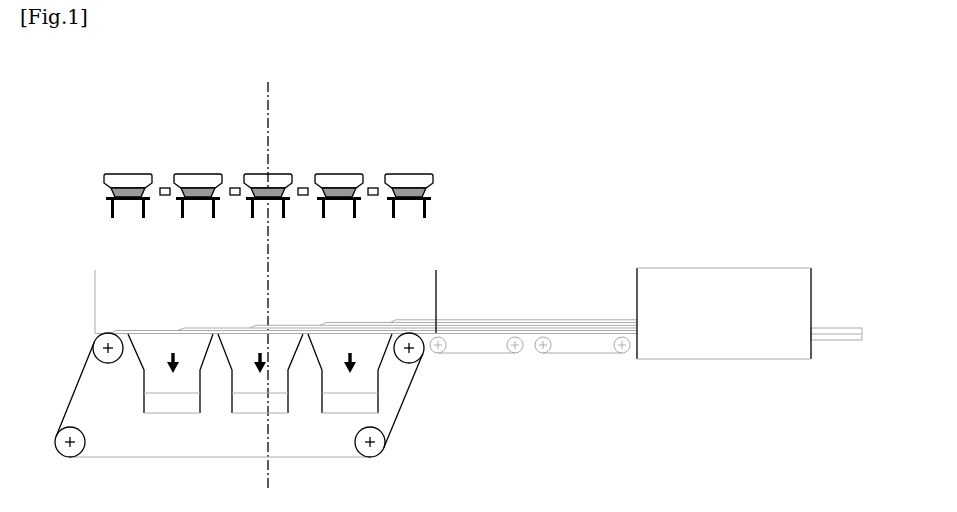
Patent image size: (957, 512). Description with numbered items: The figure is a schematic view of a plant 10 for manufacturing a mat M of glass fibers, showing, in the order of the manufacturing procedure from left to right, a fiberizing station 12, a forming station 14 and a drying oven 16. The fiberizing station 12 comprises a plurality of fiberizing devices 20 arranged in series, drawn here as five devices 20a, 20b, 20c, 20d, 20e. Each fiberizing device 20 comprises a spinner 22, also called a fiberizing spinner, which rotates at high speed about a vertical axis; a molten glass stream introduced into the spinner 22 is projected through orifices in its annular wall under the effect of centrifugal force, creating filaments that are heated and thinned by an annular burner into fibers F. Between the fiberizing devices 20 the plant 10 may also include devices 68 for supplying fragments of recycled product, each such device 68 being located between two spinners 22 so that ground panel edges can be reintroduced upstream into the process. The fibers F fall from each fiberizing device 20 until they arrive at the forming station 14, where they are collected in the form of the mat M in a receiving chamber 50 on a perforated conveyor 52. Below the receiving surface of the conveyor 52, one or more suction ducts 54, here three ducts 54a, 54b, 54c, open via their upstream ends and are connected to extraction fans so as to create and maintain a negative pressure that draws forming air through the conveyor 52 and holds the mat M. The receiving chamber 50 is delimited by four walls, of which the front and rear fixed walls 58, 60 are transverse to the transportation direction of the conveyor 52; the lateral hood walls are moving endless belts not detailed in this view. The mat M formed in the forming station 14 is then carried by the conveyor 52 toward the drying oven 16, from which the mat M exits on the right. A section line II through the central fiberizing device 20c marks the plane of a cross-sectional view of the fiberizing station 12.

The plant 10 is at (697, 137).
The fiberizing station 12 is at (452, 147).
The forming station 14 is at (446, 275).
The drying oven 16 is at (767, 268).
The fiberizing device 20 is at (270, 170).
The fiberizing device 20a is at (130, 165).
The fiberizing device 20b is at (194, 165).
The fiberizing device 20c is at (259, 166).
The fiberizing device 20d is at (338, 165).
The fiberizing device 20e is at (406, 165).
The spinner 22 is at (100, 196).
The receiving chamber 50 is at (307, 296).
The perforated conveyor 52 is at (410, 392).
The suction duct 54 is at (238, 392).
The suction duct 54a is at (150, 381).
The suction duct 54b is at (256, 385).
The suction duct 54c is at (343, 383).
The front fixed wall 58 is at (94, 298).
The rear fixed wall 60 is at (437, 302).
The device for supplying fragments of recycled product 68 is at (165, 196).
The fibers F is at (285, 208).
The mat M is at (553, 318).
The section line II is at (275, 286).